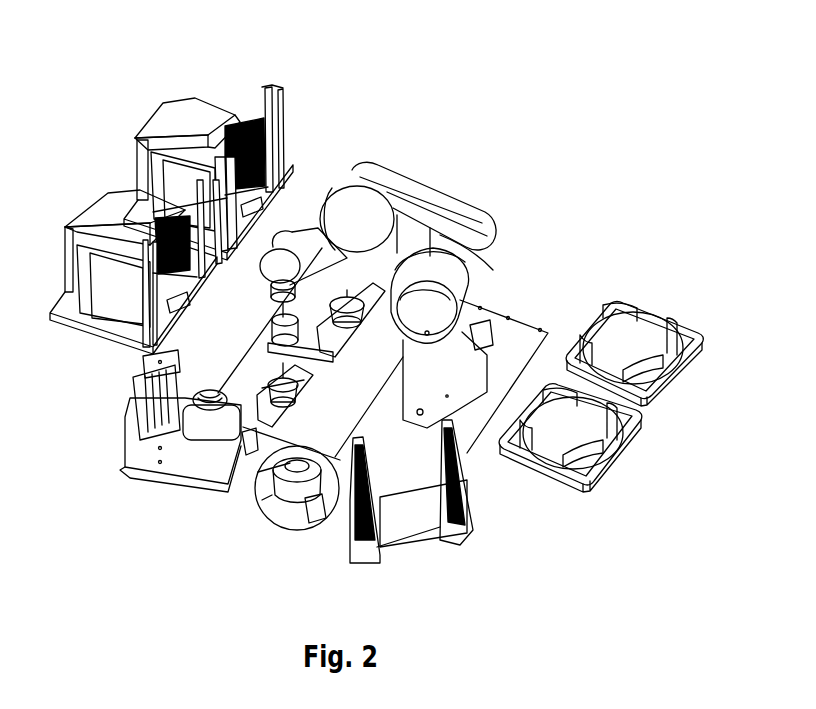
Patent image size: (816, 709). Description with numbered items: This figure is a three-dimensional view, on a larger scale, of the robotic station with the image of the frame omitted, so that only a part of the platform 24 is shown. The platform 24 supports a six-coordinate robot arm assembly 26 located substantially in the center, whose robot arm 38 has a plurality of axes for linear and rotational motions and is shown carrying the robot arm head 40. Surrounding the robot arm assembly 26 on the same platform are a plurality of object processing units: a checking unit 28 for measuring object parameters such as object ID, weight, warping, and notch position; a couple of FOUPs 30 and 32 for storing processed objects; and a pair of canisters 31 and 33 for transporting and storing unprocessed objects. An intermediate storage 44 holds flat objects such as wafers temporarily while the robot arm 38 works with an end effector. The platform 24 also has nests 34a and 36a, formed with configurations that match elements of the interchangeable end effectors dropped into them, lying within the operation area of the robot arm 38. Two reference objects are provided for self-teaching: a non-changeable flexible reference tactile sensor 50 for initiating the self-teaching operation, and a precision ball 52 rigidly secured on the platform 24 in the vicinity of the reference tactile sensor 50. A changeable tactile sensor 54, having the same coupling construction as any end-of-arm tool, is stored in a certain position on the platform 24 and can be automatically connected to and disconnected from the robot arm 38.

The platform 24 is at (546, 334).
The six-coordinate robot arm assembly 26 is at (412, 257).
The checking unit 28 is at (147, 446).
The FOUP 30 is at (168, 128).
The canister 31 is at (686, 368).
The FOUP 32 is at (97, 207).
The canister 33 is at (618, 440).
The nest 34a is at (232, 489).
The nest 36a is at (374, 290).
The robot arm 38 is at (305, 196).
The robot arm head 40 is at (325, 510).
The intermediate storage 44 is at (431, 525).
The flexible reference tactile sensor 50 is at (284, 262).
The precision ball 52 is at (243, 440).
The changeable tactile sensor 54 is at (270, 437).